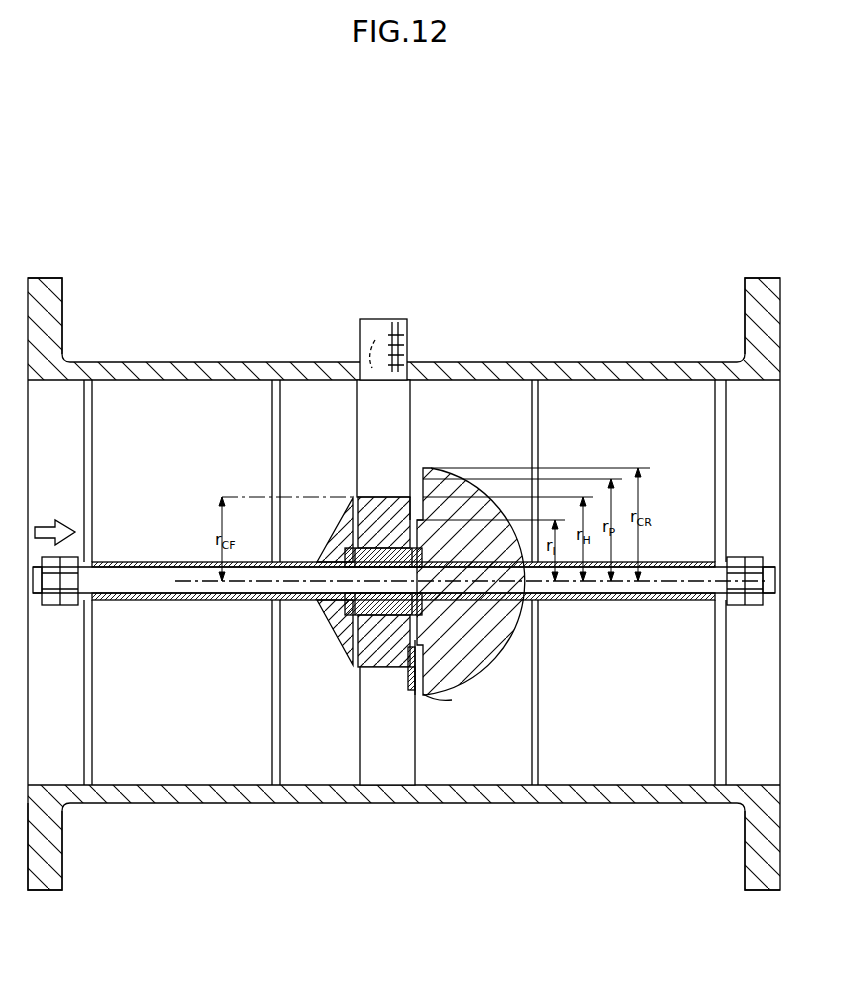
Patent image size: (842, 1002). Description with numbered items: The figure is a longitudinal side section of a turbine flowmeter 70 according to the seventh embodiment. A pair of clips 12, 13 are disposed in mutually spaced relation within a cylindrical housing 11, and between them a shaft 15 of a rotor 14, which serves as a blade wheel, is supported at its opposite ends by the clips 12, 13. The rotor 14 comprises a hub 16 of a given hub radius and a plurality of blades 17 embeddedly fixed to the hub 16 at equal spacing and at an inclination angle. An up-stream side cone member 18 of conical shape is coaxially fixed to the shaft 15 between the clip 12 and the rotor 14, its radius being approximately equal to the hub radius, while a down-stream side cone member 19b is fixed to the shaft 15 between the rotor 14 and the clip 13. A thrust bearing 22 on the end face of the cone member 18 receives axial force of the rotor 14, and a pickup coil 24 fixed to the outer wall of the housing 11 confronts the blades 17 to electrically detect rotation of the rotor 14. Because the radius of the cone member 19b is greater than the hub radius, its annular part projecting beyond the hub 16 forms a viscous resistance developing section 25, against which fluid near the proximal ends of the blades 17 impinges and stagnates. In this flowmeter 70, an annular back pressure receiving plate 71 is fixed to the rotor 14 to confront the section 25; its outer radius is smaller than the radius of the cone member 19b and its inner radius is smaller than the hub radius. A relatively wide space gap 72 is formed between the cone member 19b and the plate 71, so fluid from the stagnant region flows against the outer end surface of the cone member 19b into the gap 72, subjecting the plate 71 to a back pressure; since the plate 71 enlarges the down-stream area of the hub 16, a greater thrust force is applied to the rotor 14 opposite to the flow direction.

The turbine flowmeter 70 is at (296, 336).
The cylindrical housing 11 is at (606, 362).
The clip 12 is at (86, 500).
The clip 13 is at (724, 515).
The rotor 14 is at (350, 480).
The shaft 15 is at (150, 570).
The hub 16 is at (372, 668).
The blades 17 is at (368, 740).
The up-stream side cone member 18 is at (340, 540).
The down-stream side cone member 19b is at (528, 630).
The thrust bearing 22 is at (330, 628).
The pickup coil 24 is at (409, 326).
The viscous resistance developing section 25 is at (430, 700).
The back pressure receiving plate 71 is at (410, 678).
The space gap 72 is at (416, 692).